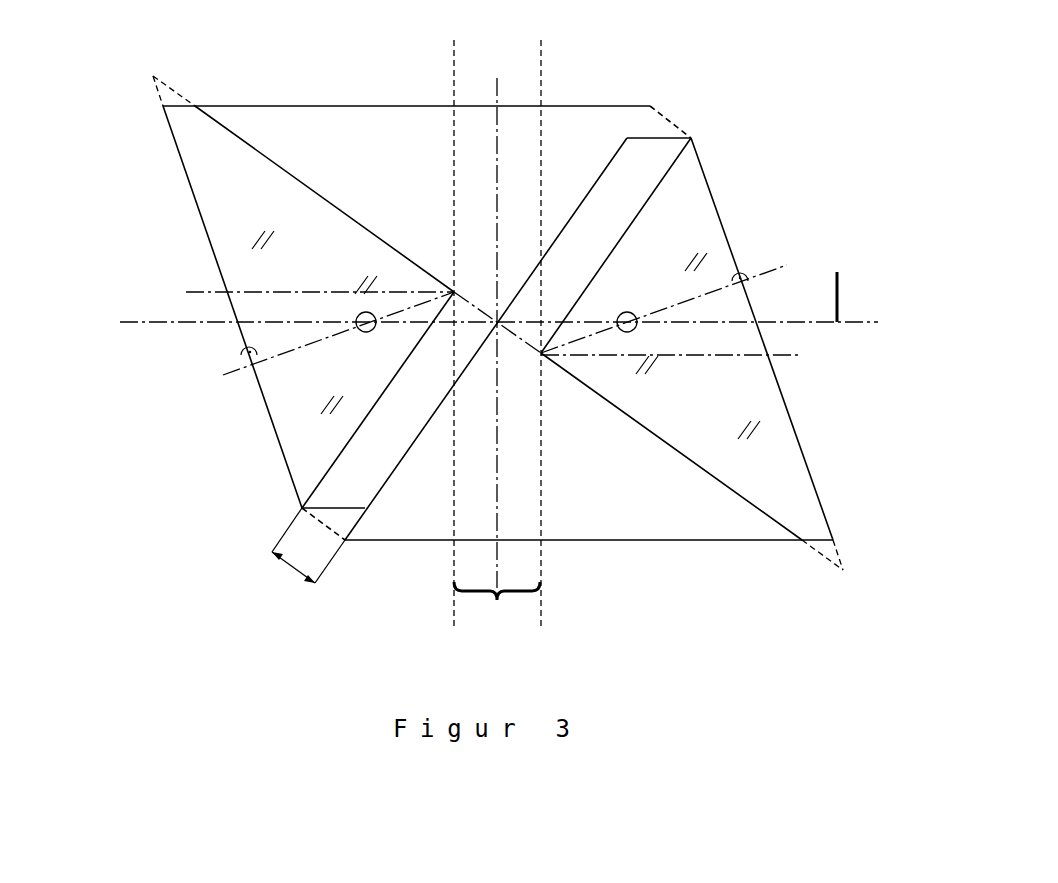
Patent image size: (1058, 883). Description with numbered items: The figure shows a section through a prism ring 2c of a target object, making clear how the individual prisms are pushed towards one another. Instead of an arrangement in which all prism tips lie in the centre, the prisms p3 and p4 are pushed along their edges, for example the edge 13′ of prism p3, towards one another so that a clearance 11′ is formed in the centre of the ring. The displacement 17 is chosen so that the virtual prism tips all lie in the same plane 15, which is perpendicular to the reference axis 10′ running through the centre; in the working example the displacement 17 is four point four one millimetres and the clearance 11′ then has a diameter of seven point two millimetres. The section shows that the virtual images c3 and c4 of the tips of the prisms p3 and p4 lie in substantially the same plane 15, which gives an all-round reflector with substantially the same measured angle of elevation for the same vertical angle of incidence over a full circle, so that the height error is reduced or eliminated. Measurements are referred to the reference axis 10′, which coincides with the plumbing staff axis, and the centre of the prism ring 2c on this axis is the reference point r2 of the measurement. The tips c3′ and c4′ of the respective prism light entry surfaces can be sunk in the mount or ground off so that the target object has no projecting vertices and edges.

The prism ring 2c is at (748, 53).
The edge 13′ is at (255, 148).
The reference axis 10′ is at (497, 430).
The clearance 11′ is at (497, 340).
The plane 15 is at (499, 276).
The displacement 17 is at (299, 556).
The virtual image of prism tip c3 is at (346, 315).
The virtual image of prism tip c4 is at (642, 306).
The tip of prism light entry surface c3′ is at (147, 95).
The tip of prism light entry surface c4′ is at (846, 540).
The prism p3 is at (282, 387).
The prism p4 is at (772, 437).
The reference point r2 is at (478, 333).